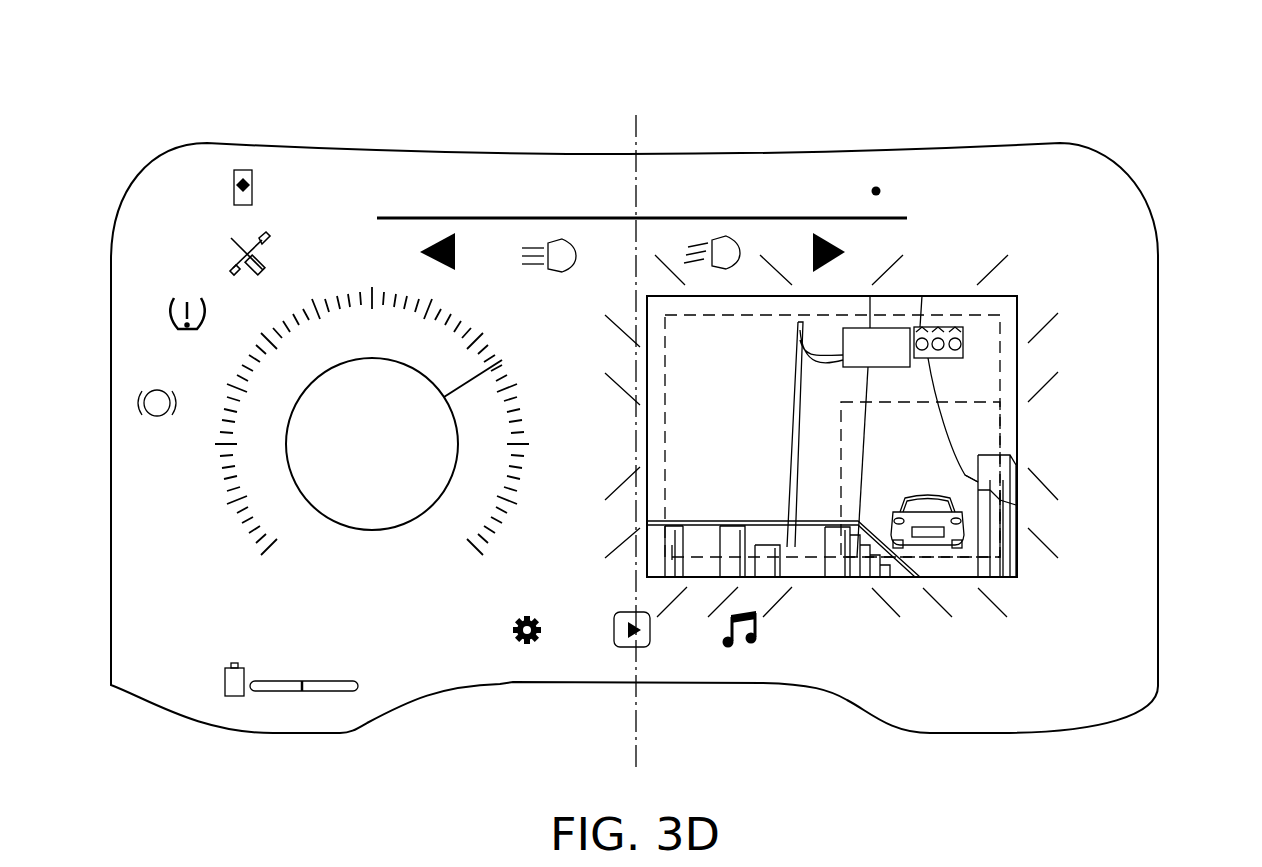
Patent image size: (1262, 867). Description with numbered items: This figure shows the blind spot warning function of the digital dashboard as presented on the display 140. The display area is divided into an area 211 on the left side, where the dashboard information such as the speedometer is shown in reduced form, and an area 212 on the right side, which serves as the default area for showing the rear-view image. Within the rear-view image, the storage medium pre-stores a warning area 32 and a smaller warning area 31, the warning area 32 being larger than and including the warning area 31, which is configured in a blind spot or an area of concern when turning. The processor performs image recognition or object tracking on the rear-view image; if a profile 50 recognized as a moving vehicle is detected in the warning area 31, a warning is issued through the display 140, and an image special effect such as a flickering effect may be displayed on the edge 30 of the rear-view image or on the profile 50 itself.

The display 140 is at (1220, 769).
The area 211 is at (324, 265).
The area 212 is at (987, 230).
The edge 30 is at (1017, 443).
The warning area 32 is at (758, 313).
The warning area 31 is at (973, 400).
The profile 50 is at (960, 497).